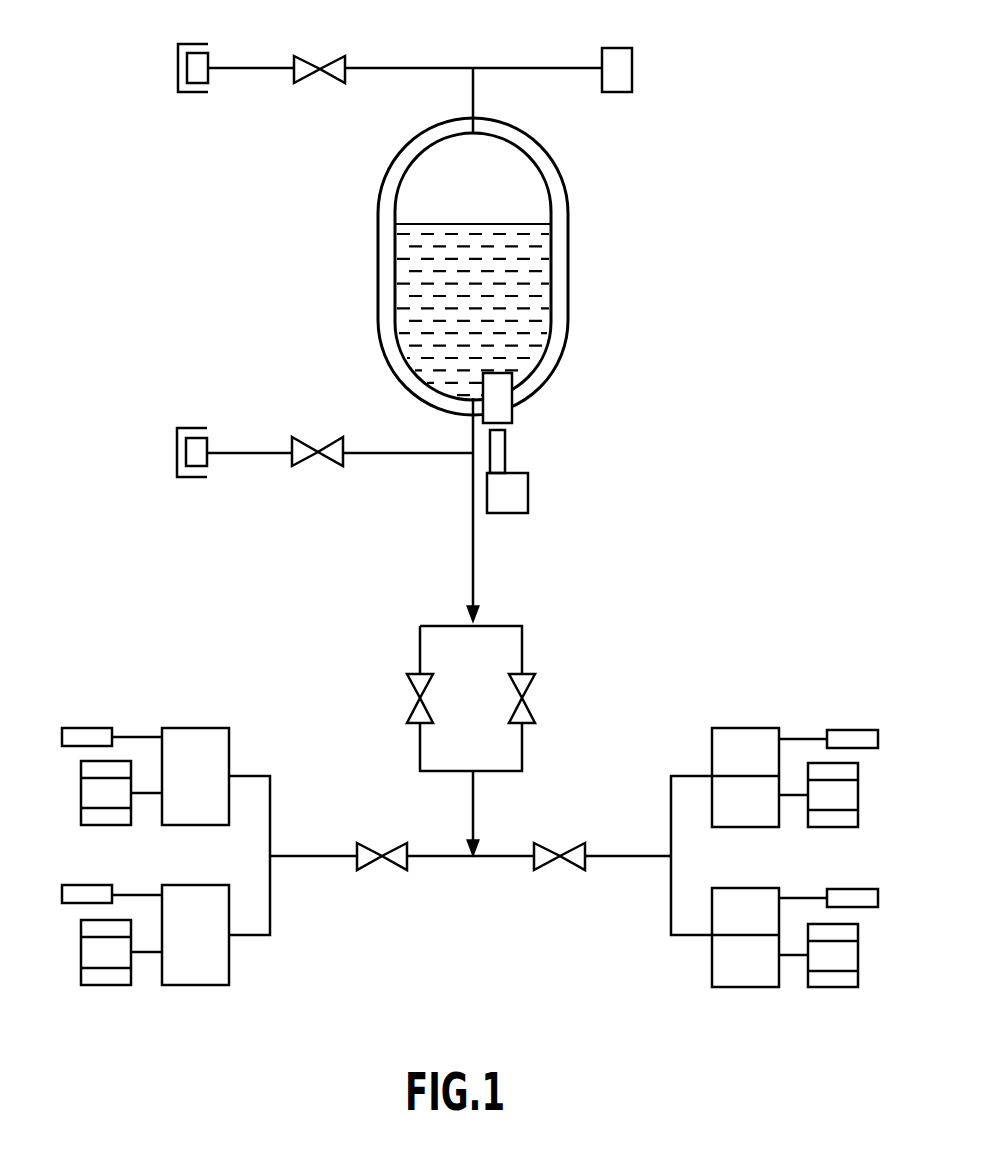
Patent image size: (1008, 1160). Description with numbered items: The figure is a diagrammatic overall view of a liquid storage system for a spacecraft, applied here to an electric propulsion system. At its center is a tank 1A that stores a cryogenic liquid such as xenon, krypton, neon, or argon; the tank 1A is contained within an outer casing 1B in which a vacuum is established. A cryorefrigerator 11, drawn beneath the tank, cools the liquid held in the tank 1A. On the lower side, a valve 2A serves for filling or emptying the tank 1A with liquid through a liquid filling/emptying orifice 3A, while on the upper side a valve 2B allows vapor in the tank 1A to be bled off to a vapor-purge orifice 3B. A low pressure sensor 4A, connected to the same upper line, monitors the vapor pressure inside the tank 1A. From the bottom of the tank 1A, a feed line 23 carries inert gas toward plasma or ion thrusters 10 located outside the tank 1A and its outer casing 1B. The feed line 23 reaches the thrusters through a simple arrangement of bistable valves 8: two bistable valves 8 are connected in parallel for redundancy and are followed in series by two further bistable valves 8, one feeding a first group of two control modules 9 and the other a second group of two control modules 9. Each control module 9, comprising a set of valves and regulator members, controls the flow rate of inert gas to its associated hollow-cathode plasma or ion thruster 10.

The tank 1A is at (428, 265).
The outer casing 1B is at (378, 305).
The valve 2A is at (318, 452).
The valve 2B is at (320, 68).
The liquid filling/emptying orifice 3A is at (195, 454).
The vapor-purge orifice 3B is at (196, 70).
The low pressure sensor 4A is at (622, 70).
The bistable valve 8 is at (420, 698).
The control module 9 is at (203, 792).
The plasma or ion thruster 10 is at (81, 790).
The cryorefrigerator 11 is at (528, 494).
The feed line 23 is at (473, 590).